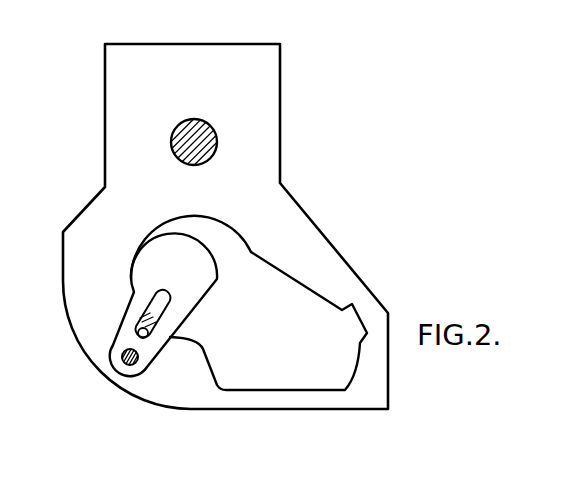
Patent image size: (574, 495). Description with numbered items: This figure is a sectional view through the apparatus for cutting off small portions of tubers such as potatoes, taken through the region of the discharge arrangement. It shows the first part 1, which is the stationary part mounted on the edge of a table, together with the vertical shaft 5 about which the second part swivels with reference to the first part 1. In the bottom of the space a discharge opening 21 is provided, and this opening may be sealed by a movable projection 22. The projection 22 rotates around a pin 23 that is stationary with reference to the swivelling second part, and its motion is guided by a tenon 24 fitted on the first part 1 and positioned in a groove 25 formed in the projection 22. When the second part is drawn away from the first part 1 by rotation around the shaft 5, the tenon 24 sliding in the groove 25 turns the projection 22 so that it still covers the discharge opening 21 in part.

The first part 1 is at (325, 260).
The vertical shaft 5 is at (212, 127).
The discharge opening 21 is at (230, 253).
The movable projection 22 is at (153, 270).
The pin 23 is at (128, 364).
The tenon 24 is at (147, 338).
The groove 25 is at (161, 305).